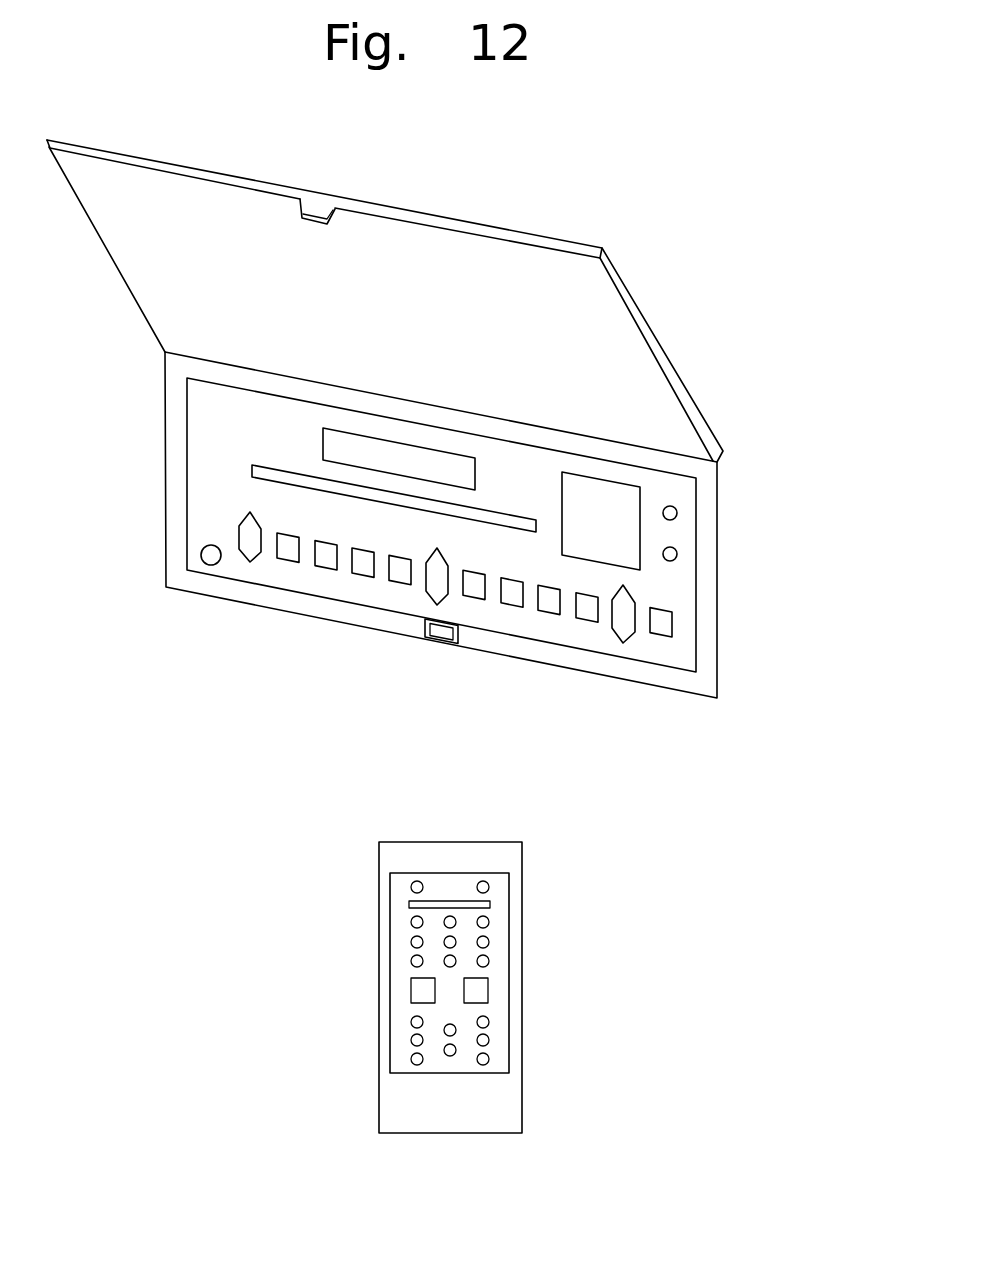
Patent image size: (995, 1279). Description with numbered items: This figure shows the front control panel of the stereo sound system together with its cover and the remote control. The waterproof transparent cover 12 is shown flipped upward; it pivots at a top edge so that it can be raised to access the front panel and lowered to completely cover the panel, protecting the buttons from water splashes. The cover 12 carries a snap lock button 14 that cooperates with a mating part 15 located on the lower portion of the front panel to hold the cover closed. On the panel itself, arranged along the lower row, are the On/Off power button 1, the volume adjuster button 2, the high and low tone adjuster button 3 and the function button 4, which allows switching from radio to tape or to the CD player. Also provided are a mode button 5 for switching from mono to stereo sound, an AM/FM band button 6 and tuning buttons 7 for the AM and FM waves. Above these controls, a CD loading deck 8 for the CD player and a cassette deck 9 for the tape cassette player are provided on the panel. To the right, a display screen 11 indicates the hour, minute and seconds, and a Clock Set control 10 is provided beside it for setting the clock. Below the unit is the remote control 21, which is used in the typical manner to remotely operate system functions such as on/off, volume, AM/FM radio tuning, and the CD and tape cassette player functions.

The On/Off power button 1 is at (210, 563).
The volume adjuster button 2 is at (252, 560).
The high and low tone adjuster button 3 is at (437, 588).
The function button 4 is at (622, 630).
The mode button 5 is at (324, 559).
The AM/FM band button 6 is at (550, 605).
The tuning buttons 7 is at (475, 593).
The CD loading deck 8 is at (250, 470).
The cassette deck 9 is at (322, 443).
The Clock Set control 10 is at (677, 553).
The display screen 11 is at (632, 500).
The waterproof transparent cover 12 is at (673, 372).
The snap lock button 14 is at (317, 208).
The mating part 15 is at (440, 633).
The remote control 21 is at (379, 945).